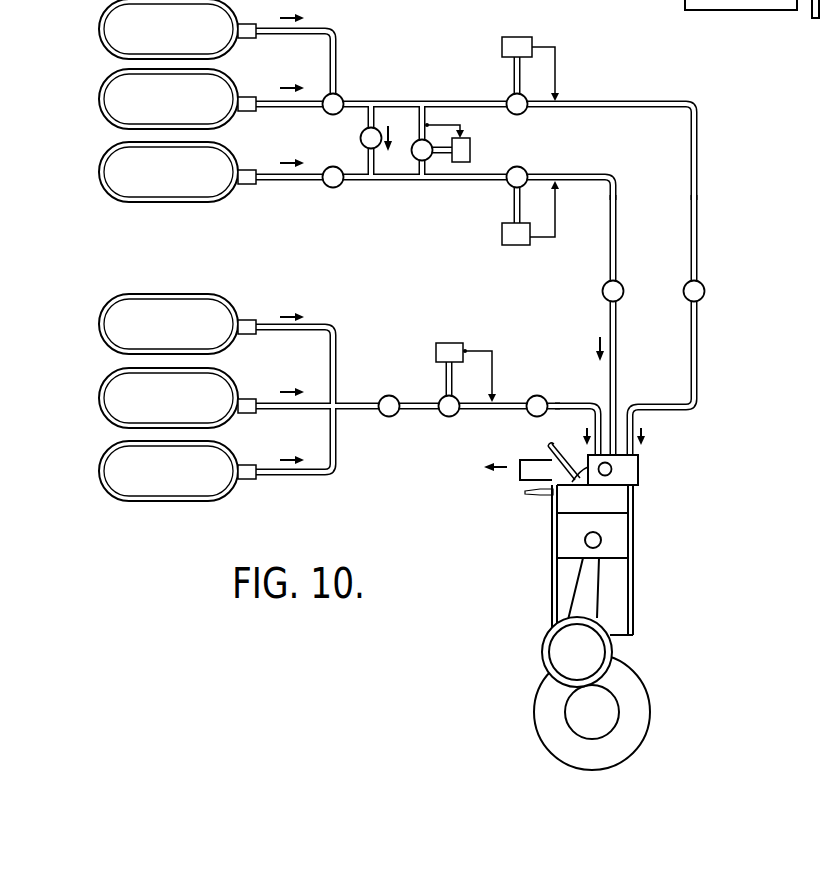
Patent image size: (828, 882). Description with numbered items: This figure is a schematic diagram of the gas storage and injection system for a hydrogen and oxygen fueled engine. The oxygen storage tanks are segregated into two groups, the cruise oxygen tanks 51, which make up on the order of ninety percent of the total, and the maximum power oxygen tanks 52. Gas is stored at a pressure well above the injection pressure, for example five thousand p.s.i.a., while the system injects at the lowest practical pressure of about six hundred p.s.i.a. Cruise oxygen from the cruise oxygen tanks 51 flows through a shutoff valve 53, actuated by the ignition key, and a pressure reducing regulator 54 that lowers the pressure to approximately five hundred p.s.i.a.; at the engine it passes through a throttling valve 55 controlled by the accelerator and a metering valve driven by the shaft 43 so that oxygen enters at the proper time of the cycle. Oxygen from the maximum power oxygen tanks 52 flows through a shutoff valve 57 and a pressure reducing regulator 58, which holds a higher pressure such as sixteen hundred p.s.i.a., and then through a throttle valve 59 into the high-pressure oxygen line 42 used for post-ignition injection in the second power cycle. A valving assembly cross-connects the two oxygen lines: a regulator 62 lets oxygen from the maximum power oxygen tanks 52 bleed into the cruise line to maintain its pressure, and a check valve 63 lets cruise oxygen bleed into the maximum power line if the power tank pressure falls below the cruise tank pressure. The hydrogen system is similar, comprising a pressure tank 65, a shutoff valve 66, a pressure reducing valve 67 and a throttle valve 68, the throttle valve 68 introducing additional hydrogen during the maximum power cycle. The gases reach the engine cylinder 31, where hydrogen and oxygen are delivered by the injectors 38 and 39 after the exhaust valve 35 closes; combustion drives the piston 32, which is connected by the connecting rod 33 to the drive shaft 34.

The cruise oxygen tanks 51 is at (93, 64).
The maximum power oxygen tanks 52 is at (110, 172).
The shutoff valve 53 is at (341, 96).
The pressure reducing regulator 54 is at (508, 96).
The throttling valve 55 is at (705, 291).
The shutoff valve 57 is at (327, 188).
The pressure reducing regulator 58 is at (524, 170).
The throttle valve 59 is at (603, 291).
The regulator 62 is at (427, 158).
The check valve 63 is at (361, 138).
The pressure tank 65 is at (100, 405).
The shutoff valve 66 is at (390, 418).
The pressure reducing valve 67 is at (450, 418).
The throttle valve 68 is at (540, 396).
The high-pressure oxygen line 42 is at (615, 336).
The injector 38 is at (698, 373).
The injector 39 is at (577, 404).
The engine cylinder 31 is at (625, 498).
The piston 32 is at (560, 540).
The connecting rod 33 is at (585, 582).
The drive shaft 34 is at (575, 713).
The exhaust valve 35 is at (549, 447).
The shaft 43 is at (612, 469).